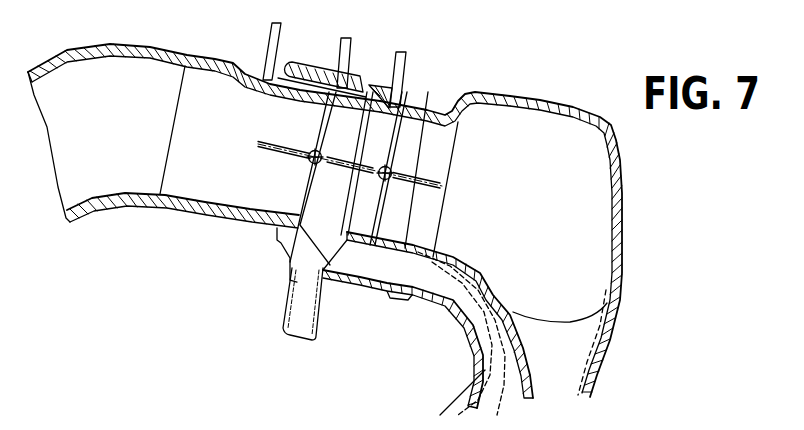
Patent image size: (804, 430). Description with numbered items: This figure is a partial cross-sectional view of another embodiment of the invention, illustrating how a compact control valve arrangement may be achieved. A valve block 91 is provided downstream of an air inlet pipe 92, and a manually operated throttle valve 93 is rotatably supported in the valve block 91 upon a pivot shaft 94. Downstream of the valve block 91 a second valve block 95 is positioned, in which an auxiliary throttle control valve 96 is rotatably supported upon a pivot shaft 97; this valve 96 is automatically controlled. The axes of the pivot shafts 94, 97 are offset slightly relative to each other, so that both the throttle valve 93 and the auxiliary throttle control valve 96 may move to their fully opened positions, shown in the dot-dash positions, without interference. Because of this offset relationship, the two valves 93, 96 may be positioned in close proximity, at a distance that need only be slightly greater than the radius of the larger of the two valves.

The valve block 91 is at (233, 218).
The air inlet pipe 92 is at (117, 44).
The manually operated throttle valve 93 is at (308, 181).
The pivot shaft 94 is at (310, 152).
The second valve block 95 is at (422, 111).
The auxiliary throttle control valve 96 is at (440, 212).
The pivot shaft 97 is at (391, 173).